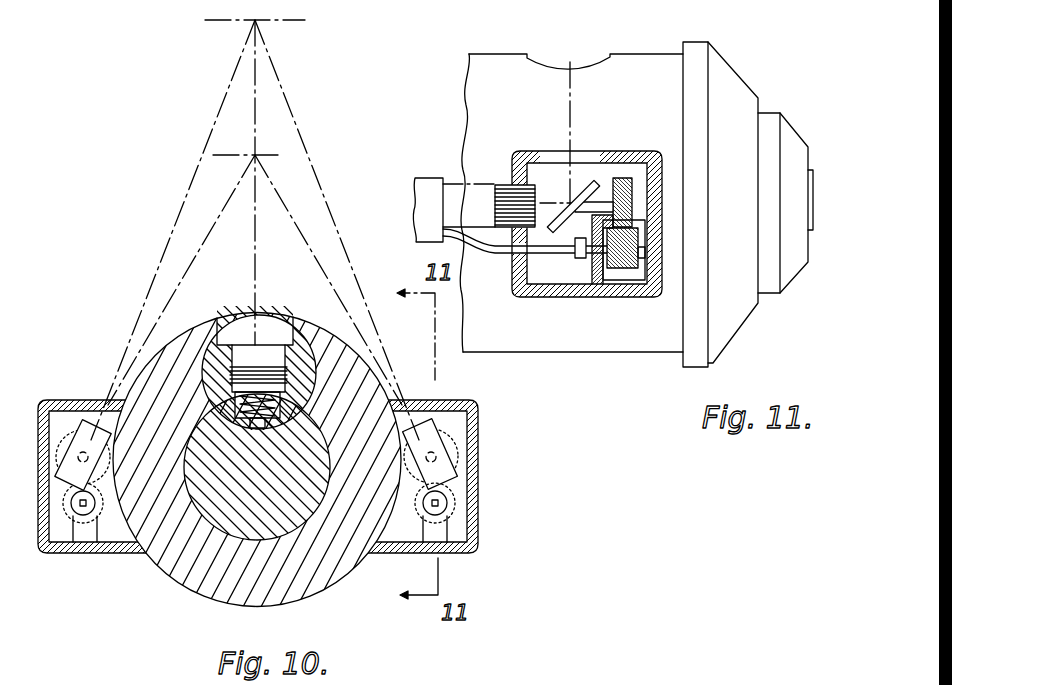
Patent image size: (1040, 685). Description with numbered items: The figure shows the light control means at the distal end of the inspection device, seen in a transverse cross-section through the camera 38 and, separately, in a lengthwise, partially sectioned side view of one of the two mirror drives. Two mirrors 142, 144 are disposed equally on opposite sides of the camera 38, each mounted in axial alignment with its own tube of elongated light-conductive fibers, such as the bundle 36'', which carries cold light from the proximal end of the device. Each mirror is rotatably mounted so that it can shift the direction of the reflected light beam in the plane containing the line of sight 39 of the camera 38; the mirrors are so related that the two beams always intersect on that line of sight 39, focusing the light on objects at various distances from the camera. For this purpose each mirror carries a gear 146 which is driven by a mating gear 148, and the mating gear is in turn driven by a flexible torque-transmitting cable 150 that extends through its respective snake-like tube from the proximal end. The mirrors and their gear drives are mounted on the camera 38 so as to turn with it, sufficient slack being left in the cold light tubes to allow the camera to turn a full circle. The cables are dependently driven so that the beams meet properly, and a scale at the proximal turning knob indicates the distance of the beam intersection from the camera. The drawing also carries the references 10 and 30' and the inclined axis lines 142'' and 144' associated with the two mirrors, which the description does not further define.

In FIG. 11, the apparatus 10 is at (506, 8).
In FIG. 10, the workpiece 30' is at (81, 9).
In FIG. 11, the bundle of light-conductive fibers 36'' is at (474, 196).
In FIG. 10, the camera 38 is at (236, 301).
In FIG. 11, the camera 38 is at (587, 353).
In FIG. 10, the line of sight 39 is at (257, 262).
In FIG. 10, the mirror 142 is at (79, 427).
In FIG. 10, the axis of adjusting screw 142'' is at (173, 230).
In FIG. 10, the mirror 144 is at (468, 443).
In FIG. 11, the mirror 144 is at (581, 175).
In FIG. 10, the axis of lever 144' is at (337, 230).
In FIG. 11, the gear 146 is at (623, 178).
In FIG. 10, the mating gear 148 is at (444, 501).
In FIG. 11, the mating gear 148 is at (633, 271).
In FIG. 11, the flexible torque-transmitting cable 150 is at (474, 245).